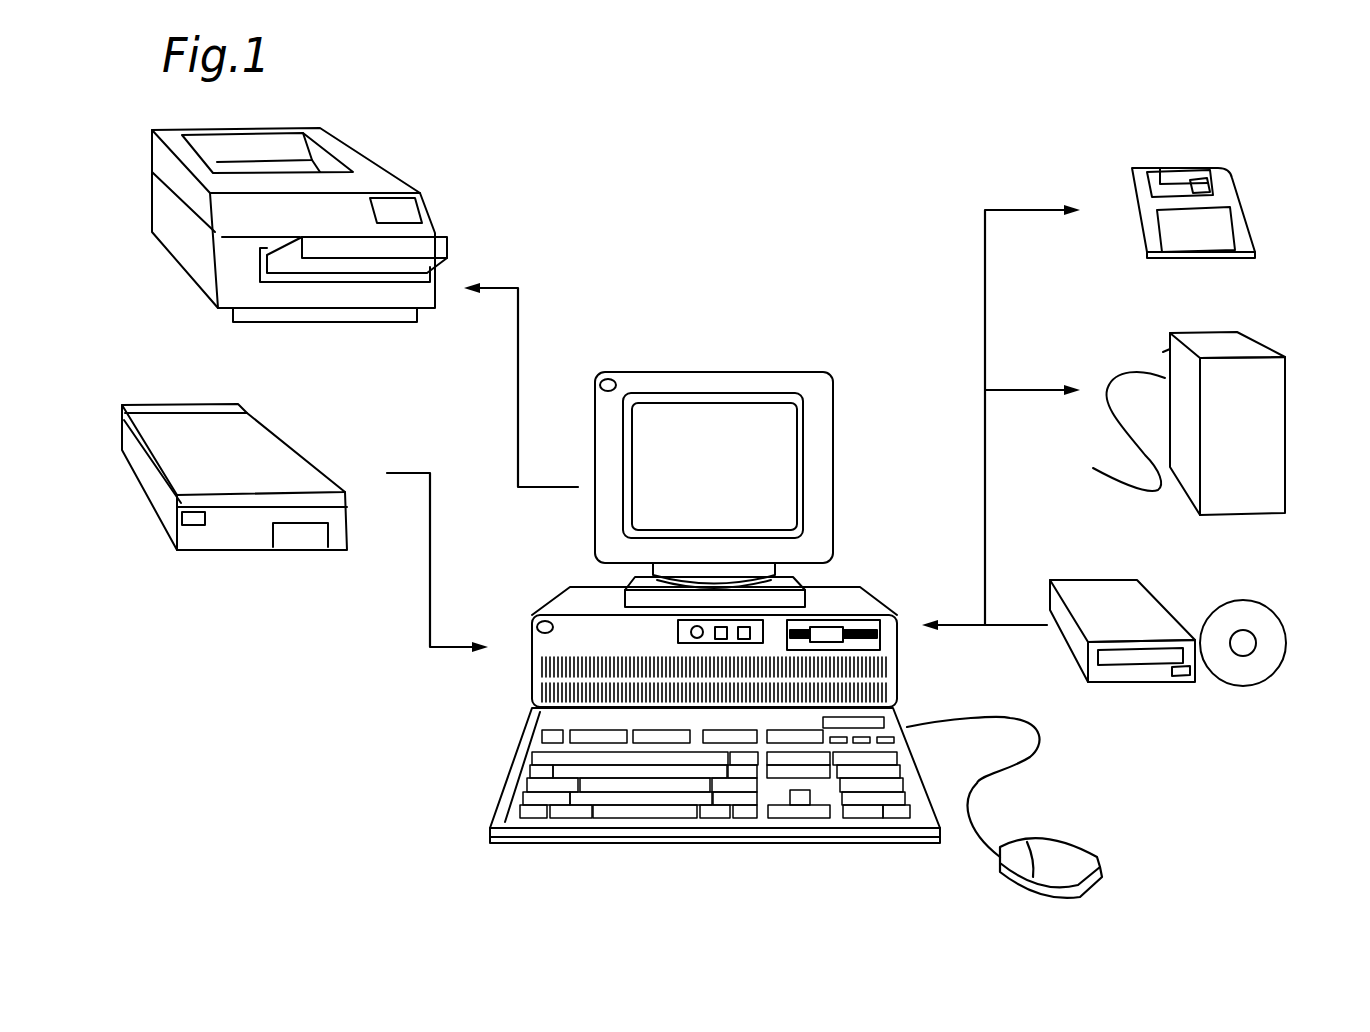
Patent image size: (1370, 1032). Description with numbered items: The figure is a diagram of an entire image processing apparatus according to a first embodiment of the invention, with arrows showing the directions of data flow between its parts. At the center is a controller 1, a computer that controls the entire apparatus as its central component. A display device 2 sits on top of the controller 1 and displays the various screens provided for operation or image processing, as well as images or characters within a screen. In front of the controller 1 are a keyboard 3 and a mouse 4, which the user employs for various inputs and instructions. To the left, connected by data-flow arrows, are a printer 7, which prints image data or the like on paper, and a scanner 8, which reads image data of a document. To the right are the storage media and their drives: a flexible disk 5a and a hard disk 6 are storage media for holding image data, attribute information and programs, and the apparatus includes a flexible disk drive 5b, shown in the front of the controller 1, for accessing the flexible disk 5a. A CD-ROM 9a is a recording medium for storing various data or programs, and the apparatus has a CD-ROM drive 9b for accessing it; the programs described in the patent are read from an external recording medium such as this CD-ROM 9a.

The controller 1 is at (699, 629).
The display device 2 is at (593, 455).
The keyboard 3 is at (520, 740).
The mouse 4 is at (1040, 867).
The flexible disk 5a is at (1223, 228).
The flexible disk drive 5b is at (862, 628).
The hard disk 6 is at (1240, 340).
The printer 7 is at (387, 178).
The scanner 8 is at (273, 453).
The CD-ROM 9a is at (1267, 617).
The CD-ROM drive 9b is at (1107, 598).